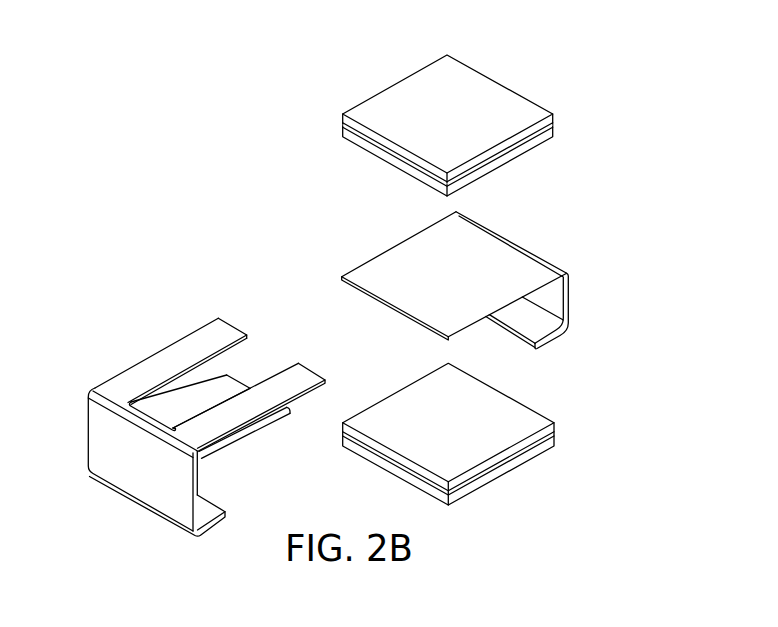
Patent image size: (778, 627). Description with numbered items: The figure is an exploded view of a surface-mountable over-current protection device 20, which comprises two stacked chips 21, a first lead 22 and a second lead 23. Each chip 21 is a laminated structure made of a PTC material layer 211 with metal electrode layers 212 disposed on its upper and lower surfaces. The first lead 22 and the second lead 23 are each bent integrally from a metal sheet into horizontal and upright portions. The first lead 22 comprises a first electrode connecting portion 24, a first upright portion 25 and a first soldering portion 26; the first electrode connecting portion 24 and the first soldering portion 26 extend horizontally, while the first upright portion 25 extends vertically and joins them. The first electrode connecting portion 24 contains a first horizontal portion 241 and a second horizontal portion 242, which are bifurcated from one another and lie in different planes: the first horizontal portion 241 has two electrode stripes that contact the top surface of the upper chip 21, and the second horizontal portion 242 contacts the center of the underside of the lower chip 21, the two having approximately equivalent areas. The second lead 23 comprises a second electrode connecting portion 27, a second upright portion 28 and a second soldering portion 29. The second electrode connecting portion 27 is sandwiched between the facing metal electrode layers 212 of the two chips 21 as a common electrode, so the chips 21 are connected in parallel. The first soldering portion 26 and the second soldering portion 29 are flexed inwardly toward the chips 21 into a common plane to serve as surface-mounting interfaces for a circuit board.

The surface-mountable over-current protection device 20 is at (640, 65).
The chip 21 is at (530, 112).
The PTC material layer 211 is at (553, 126).
The metal electrode layer 212 is at (557, 115).
The first lead 22 is at (206, 343).
The second lead 23 is at (482, 278).
The first electrode connecting portion 24 is at (213, 329).
The first horizontal portion 241 is at (225, 330).
The second horizontal portion 242 is at (237, 380).
The first upright portion 25 is at (95, 437).
The first soldering portion 26 is at (210, 507).
The second electrode connecting portion 27 is at (377, 267).
The second upright portion 28 is at (570, 293).
The second soldering portion 29 is at (556, 337).